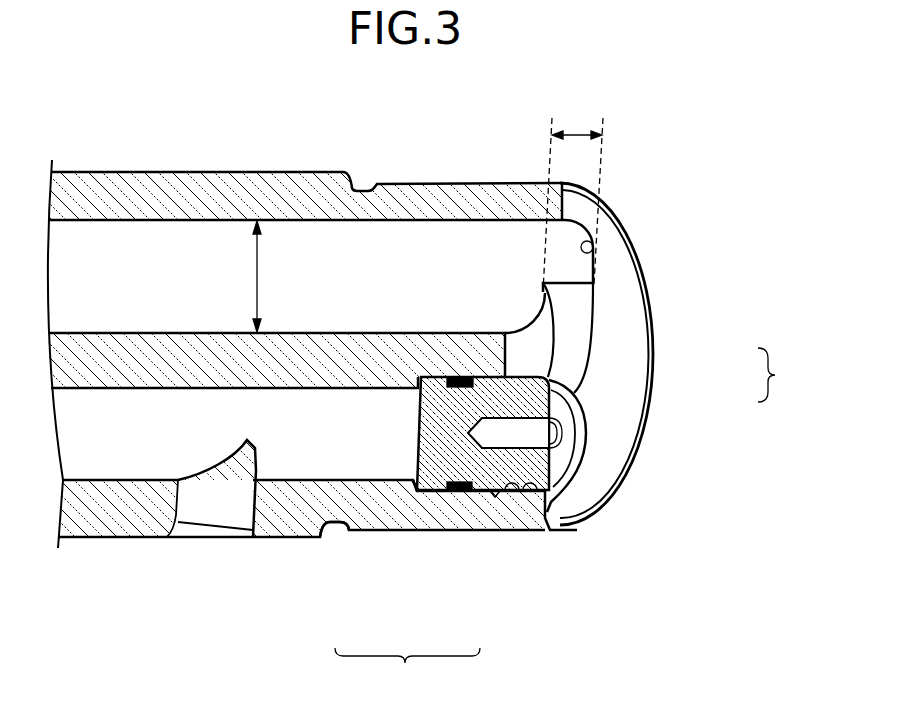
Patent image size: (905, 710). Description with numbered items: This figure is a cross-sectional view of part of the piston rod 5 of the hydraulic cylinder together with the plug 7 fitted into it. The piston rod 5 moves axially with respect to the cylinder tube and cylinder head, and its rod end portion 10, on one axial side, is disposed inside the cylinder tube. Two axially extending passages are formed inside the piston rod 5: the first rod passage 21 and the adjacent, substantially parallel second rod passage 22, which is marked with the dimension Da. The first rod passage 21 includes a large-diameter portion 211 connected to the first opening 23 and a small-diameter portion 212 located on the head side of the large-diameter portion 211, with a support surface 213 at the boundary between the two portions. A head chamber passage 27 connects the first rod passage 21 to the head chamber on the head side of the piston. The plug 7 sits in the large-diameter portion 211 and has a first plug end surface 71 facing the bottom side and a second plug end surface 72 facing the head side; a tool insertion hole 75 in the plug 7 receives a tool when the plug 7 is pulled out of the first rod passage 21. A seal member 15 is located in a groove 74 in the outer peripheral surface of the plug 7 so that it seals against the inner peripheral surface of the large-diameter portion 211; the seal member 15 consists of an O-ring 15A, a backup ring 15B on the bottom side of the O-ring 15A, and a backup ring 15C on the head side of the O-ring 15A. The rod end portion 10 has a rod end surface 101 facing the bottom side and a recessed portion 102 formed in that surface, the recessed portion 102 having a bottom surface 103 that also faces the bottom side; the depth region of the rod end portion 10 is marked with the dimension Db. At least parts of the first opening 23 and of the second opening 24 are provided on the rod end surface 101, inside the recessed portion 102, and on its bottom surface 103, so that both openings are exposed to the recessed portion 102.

The piston rod 5 is at (103, 172).
The second rod passage 22 is at (160, 237).
The inner diameter Da is at (256, 268).
The support surface 213 is at (432, 376).
The first rod passage 21 is at (122, 463).
The head chamber passage 27 is at (222, 517).
The small-diameter portion 212 is at (295, 476).
The second plug end surface 72 is at (400, 481).
The plug 7 is at (559, 495).
The tool insertion hole 75 is at (545, 434).
The groove 74 is at (452, 489).
The O-ring 15A is at (456, 493).
The backup ring 15B is at (466, 493).
The backup ring 15C is at (446, 490).
The seal member 15 is at (407, 669).
The large-diameter portion 211 is at (518, 493).
The first opening 23 is at (540, 493).
The first plug end surface 71 is at (565, 484).
The rod end surface 101 is at (628, 392).
The recessed portion 102 is at (587, 346).
The bottom surface 103 is at (546, 340).
The rod end portion 10 is at (781, 375).
The second opening 24 is at (598, 251).
The cap depth Db is at (573, 199).